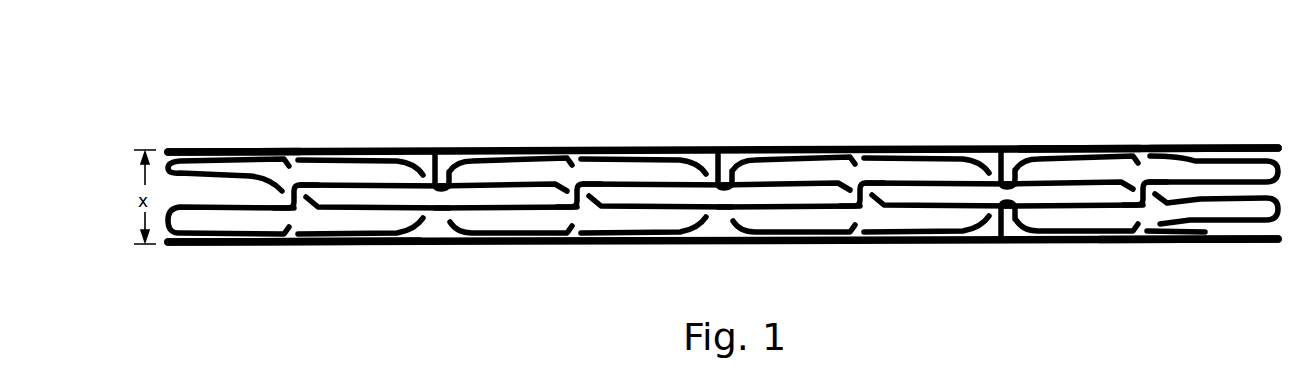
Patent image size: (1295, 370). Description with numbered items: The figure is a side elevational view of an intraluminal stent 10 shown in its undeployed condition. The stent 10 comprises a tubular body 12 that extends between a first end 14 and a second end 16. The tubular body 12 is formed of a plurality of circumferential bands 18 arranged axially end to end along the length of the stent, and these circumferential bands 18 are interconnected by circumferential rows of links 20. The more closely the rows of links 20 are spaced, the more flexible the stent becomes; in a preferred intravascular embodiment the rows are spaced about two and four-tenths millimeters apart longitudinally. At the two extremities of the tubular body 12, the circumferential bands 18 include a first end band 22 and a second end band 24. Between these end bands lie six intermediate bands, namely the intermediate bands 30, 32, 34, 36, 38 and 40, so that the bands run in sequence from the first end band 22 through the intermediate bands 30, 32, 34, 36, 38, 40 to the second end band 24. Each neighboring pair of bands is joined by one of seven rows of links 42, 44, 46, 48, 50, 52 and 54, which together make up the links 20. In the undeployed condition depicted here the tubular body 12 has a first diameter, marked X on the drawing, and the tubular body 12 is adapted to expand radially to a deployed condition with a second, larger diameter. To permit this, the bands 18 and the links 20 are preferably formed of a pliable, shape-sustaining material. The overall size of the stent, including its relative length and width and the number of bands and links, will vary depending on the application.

The stent 10 is at (915, 84).
The tubular body 12 is at (869, 146).
The first end 14 is at (222, 148).
The second end 16 is at (1243, 147).
The circumferential bands 18 is at (1108, 146).
The links 20 is at (993, 146).
The first end band 22 is at (186, 249).
The second end band 24 is at (1208, 246).
The intermediate band 30 is at (355, 247).
The intermediate band 32 is at (490, 247).
The intermediate band 34 is at (633, 246).
The intermediate band 36 is at (786, 245).
The intermediate band 38 is at (946, 245).
The intermediate band 40 is at (1066, 245).
The row of links 42 is at (302, 148).
The row of links 44 is at (432, 148).
The row of links 46 is at (582, 148).
The row of links 48 is at (716, 148).
The row of links 50 is at (858, 245).
The row of links 52 is at (1005, 245).
The row of links 54 is at (1143, 244).